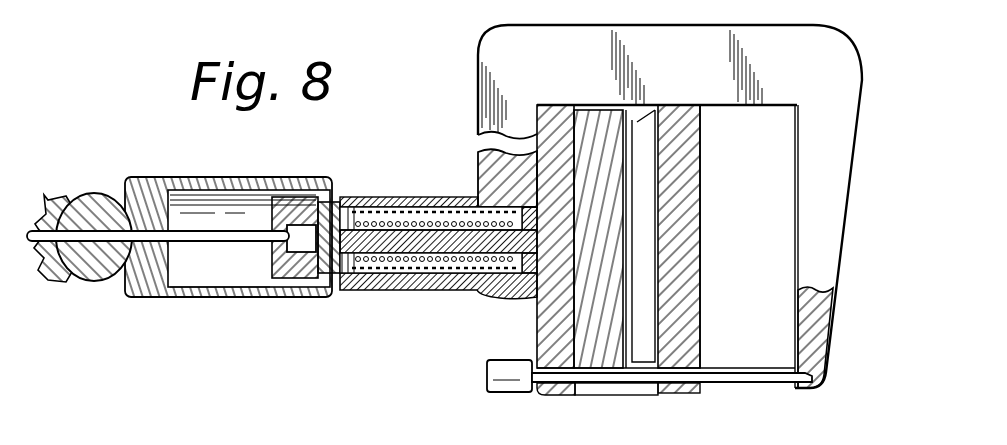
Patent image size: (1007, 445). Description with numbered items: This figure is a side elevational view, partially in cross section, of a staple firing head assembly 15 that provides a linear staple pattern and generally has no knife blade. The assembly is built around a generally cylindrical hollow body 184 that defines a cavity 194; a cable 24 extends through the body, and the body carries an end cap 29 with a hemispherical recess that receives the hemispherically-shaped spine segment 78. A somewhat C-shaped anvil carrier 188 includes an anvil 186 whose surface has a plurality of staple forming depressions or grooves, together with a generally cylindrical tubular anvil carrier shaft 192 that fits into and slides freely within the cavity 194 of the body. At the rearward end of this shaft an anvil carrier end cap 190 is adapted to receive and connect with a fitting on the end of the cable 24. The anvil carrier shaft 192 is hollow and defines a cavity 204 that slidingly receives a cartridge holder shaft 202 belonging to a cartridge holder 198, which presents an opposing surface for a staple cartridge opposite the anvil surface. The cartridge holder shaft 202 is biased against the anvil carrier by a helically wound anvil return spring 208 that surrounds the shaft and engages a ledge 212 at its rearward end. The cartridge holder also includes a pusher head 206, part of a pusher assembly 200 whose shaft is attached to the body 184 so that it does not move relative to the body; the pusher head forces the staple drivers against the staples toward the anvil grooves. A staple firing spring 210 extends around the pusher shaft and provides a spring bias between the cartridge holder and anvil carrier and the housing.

The staple firing head assembly 15 is at (472, 52).
The anvil carrier 188 is at (860, 113).
The pusher head 206 is at (488, 141).
The body 184 is at (243, 178).
The cavity 194 is at (237, 276).
The cable 24 is at (200, 255).
The anvil carrier end cap 190 is at (295, 200).
The end cap 29 is at (140, 297).
The spine segment 78 is at (37, 195).
The cartridge holder shaft 202 is at (447, 217).
The anvil carrier shaft 192 is at (405, 281).
The anvil return spring 208 is at (495, 297).
The staple firing spring 210 is at (349, 207).
The ledge 212 is at (377, 262).
The pusher assembly 200 is at (355, 264).
The cavity 204 is at (346, 266).
The cartridge holder 198 is at (548, 395).
The anvil 186 is at (795, 390).